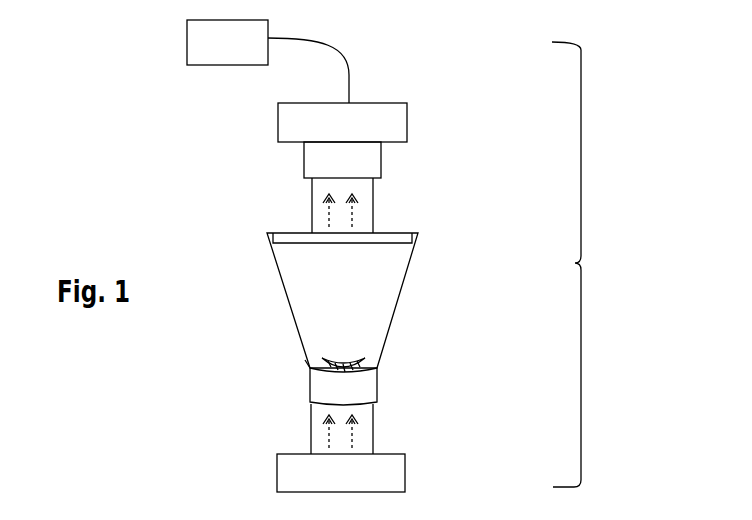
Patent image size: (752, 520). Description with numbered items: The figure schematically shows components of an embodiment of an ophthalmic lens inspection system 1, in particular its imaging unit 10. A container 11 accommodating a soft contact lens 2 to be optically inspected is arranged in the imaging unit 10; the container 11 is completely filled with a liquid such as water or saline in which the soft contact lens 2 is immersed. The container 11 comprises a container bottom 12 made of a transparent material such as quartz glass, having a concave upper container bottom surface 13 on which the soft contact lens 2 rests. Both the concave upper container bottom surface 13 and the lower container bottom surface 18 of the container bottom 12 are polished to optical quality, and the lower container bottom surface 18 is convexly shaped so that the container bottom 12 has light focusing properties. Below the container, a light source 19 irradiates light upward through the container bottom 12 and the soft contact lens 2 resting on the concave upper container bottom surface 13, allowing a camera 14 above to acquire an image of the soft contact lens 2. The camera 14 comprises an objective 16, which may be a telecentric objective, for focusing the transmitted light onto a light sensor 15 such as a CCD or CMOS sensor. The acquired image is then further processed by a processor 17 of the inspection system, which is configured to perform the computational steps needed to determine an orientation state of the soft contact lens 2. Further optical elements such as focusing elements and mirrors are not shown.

The ophthalmic lens inspection system 1 is at (100, 71).
The soft contact lens 2 is at (364, 362).
The imaging unit 10 is at (603, 263).
The container 11 is at (397, 308).
The container bottom 12 is at (376, 383).
The concave upper container bottom surface 13 is at (313, 368).
The camera 14 is at (407, 103).
The light sensor 15 is at (407, 120).
The objective 16 is at (381, 172).
The processor 17 is at (228, 65).
The lower container bottom surface 18 is at (311, 403).
The light source 19 is at (405, 477).